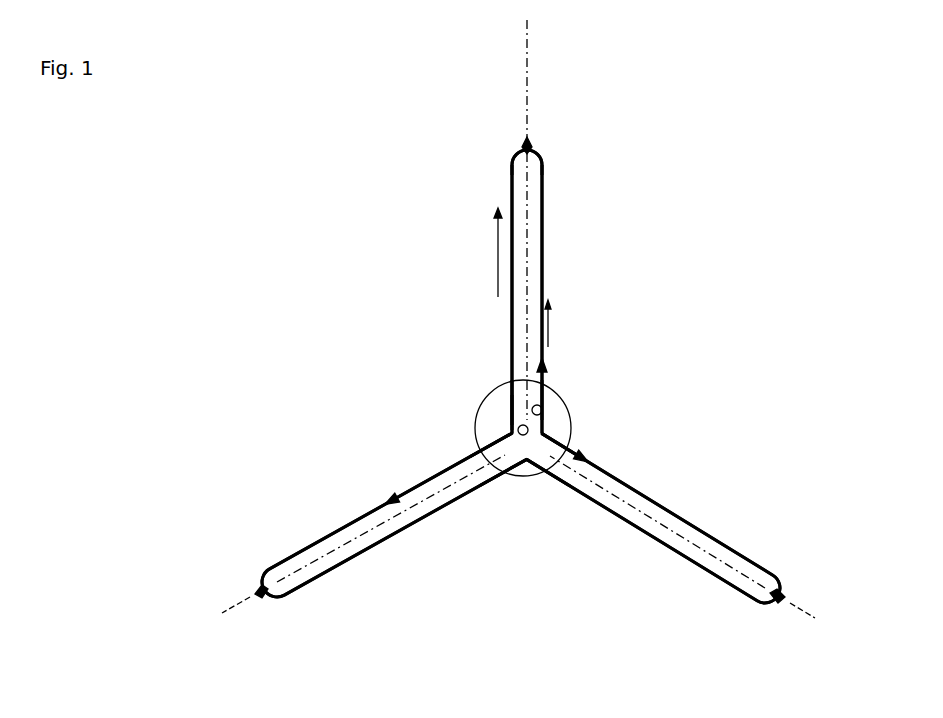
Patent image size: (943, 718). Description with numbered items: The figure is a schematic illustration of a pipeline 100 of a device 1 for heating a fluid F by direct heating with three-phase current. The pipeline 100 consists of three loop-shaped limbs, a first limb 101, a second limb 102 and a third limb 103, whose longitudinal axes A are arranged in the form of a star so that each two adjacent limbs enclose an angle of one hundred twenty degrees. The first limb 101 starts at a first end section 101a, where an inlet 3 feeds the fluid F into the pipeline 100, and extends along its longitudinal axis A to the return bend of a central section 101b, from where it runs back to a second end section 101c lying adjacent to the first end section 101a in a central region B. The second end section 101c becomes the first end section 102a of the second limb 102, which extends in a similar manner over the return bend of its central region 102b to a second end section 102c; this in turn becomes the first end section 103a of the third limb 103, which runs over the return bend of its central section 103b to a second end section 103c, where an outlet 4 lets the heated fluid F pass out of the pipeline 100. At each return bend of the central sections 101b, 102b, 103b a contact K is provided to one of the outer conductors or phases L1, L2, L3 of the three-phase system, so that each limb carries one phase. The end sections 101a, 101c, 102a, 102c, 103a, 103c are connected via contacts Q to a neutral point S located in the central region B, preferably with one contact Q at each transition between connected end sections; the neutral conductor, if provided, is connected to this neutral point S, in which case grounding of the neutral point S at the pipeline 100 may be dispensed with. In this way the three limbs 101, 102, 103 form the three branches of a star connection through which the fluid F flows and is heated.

The device 1 is at (457, 277).
The inlet 3 is at (543, 411).
The outlet 4 is at (510, 411).
The pipeline 100 is at (572, 279).
The first limb 101 is at (548, 224).
The first end section of the first limb 101a is at (543, 393).
The central section of the first limb 101b is at (510, 157).
The second end section of the first limb 101c is at (511, 418).
The second limb 102 is at (332, 574).
The first end section of the second limb 102a is at (490, 446).
The central region of the second limb 102b is at (285, 596).
The second end section of the second limb 102c is at (512, 470).
The third limb 103 is at (678, 562).
The first end section of the third limb 103a is at (530, 468).
The central section of the third limb 103b is at (768, 574).
The second end section of the third limb 103c is at (560, 444).
The longitudinal axis A is at (528, 90).
The central region B is at (512, 436).
The contact K is at (531, 141).
The contact Q is at (543, 408).
The rotation direction R is at (489, 252).
The fluid F is at (555, 324).
The neutral point S is at (523, 416).
The first phase L1 is at (528, 123).
The second phase L2 is at (232, 601).
The third phase L3 is at (807, 613).